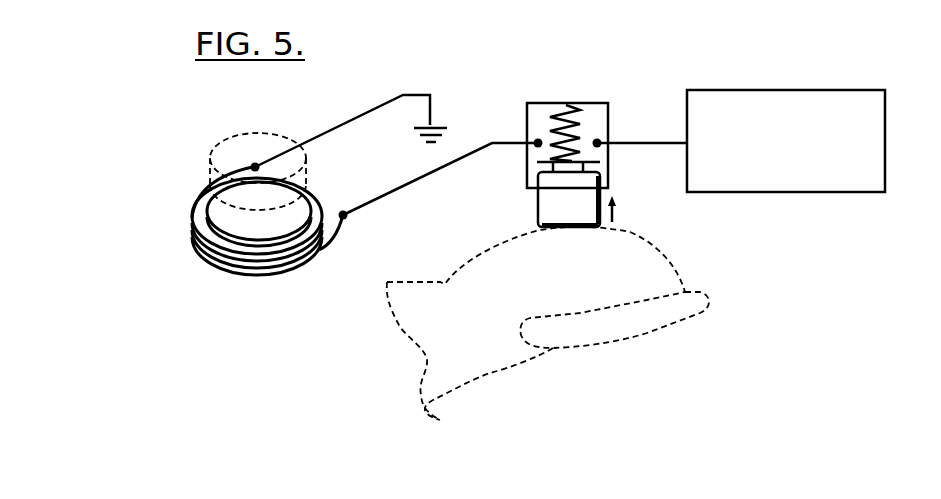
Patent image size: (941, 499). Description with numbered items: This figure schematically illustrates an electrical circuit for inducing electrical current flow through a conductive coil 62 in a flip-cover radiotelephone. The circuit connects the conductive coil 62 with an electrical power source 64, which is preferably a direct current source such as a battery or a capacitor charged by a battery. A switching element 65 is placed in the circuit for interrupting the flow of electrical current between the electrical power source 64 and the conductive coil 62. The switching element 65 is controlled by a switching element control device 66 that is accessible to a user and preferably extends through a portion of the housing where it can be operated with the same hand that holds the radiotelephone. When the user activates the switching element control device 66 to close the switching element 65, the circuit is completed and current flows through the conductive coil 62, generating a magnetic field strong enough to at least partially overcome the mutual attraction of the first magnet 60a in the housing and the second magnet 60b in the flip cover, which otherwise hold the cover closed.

The first magnet 60a is at (234, 220).
The second magnet 60b is at (218, 157).
The conductive coil 62 is at (249, 258).
The electrical power source 64 is at (790, 90).
The switching element 65 is at (612, 118).
The switching element control device 66 is at (538, 209).